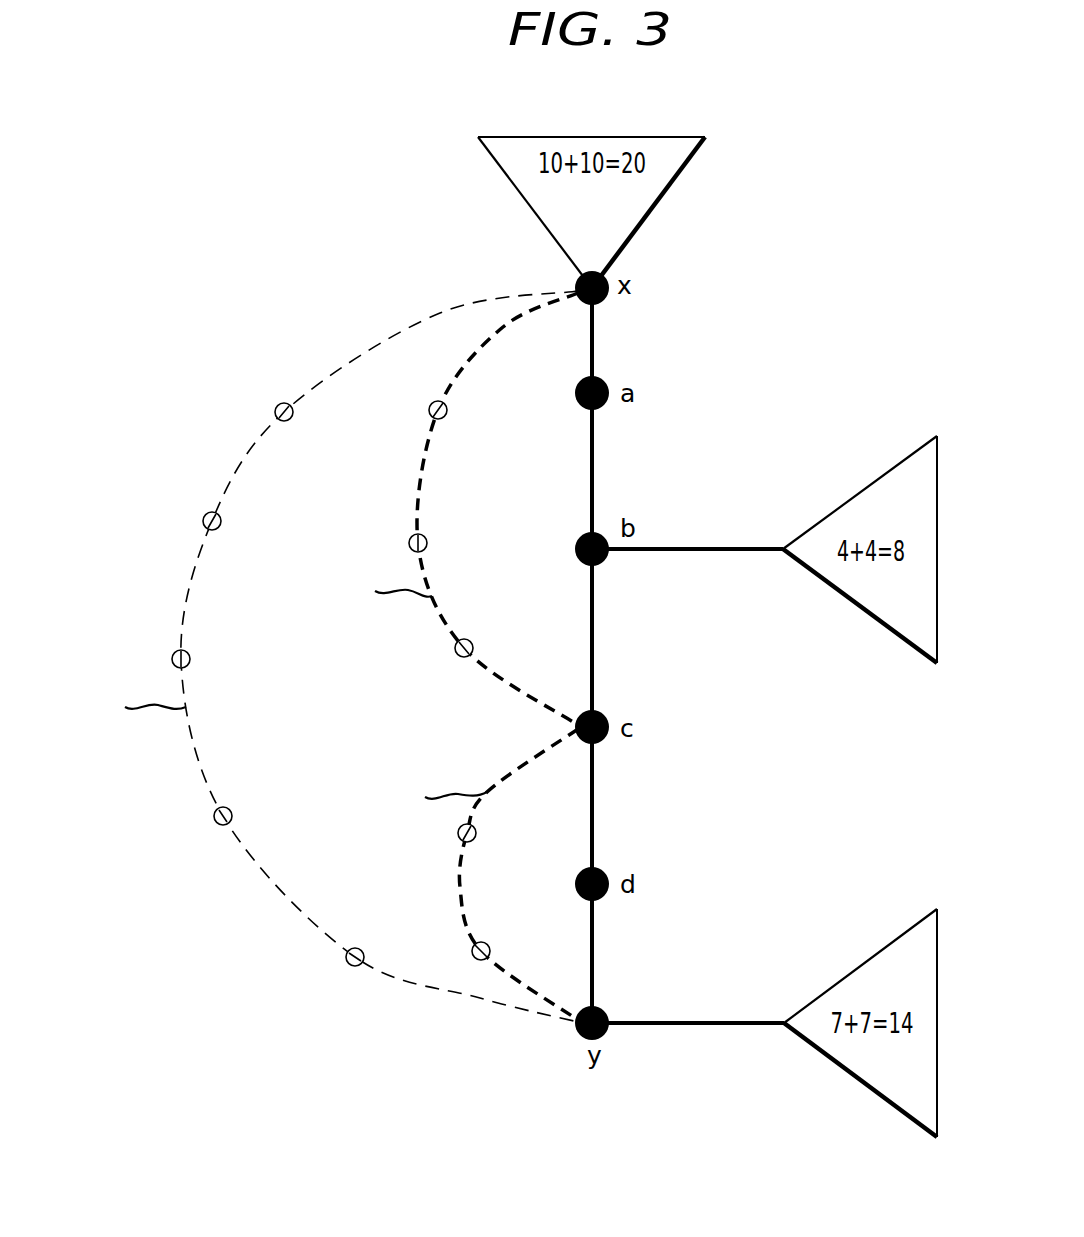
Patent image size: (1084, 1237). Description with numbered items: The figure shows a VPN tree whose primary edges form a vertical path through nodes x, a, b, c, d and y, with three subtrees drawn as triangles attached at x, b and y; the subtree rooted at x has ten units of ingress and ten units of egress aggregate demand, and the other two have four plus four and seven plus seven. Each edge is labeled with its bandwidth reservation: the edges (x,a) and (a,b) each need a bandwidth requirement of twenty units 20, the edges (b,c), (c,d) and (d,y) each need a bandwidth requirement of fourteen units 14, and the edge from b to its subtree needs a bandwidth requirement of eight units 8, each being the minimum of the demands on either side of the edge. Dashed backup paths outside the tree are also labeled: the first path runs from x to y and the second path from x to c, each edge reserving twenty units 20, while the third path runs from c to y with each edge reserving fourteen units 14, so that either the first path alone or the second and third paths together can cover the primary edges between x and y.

The bandwidth requirement of twenty units 20 is at (339, 655).
The bandwidth requirement of fourteen units 14 is at (563, 786).
The bandwidth requirement of eight units 8 is at (687, 531).